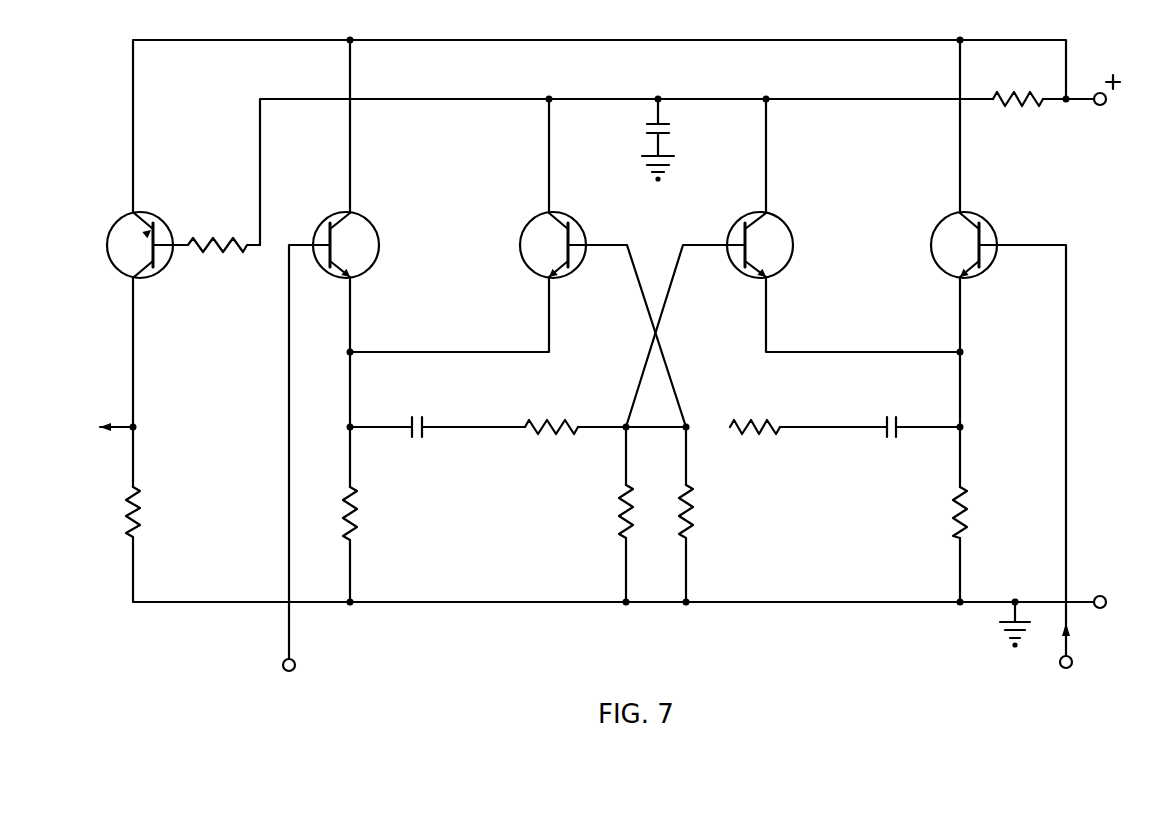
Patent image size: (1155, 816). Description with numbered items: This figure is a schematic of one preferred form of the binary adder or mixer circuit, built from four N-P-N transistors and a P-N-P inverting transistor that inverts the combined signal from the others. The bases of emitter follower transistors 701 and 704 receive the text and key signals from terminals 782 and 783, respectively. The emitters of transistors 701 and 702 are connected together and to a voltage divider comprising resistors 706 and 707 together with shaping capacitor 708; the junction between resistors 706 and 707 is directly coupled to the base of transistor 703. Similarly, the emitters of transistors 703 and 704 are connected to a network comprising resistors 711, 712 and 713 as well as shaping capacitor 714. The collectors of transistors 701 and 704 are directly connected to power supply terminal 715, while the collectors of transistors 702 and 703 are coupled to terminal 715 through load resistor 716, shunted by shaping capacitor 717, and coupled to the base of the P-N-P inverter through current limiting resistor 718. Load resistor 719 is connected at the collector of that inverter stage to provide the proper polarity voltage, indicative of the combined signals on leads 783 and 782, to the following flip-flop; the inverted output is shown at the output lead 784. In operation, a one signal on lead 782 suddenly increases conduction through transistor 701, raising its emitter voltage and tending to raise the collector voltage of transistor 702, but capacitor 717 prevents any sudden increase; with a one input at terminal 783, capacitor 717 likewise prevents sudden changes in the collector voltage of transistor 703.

The emitter follower transistor 701 is at (988, 268).
The transistor 702 is at (733, 227).
The transistor 703 is at (590, 210).
The emitter follower transistor 704 is at (323, 225).
The resistor 706 is at (762, 437).
The resistor 707 is at (698, 512).
The shaping capacitor 708 is at (898, 433).
The resistor 711 is at (360, 510).
The resistor 712 is at (553, 437).
The resistor 713 is at (615, 512).
The shaping capacitor 714 is at (408, 438).
The power supply terminal 715 is at (1104, 104).
The load resistor 716 is at (1020, 106).
The shunting shaping capacitor 717 is at (664, 134).
The current limiting resistor 718 is at (216, 237).
The load resistor 719 is at (143, 510).
The terminal 782 is at (1072, 667).
The terminal 783 is at (296, 660).
The input terminal 784 is at (138, 426).